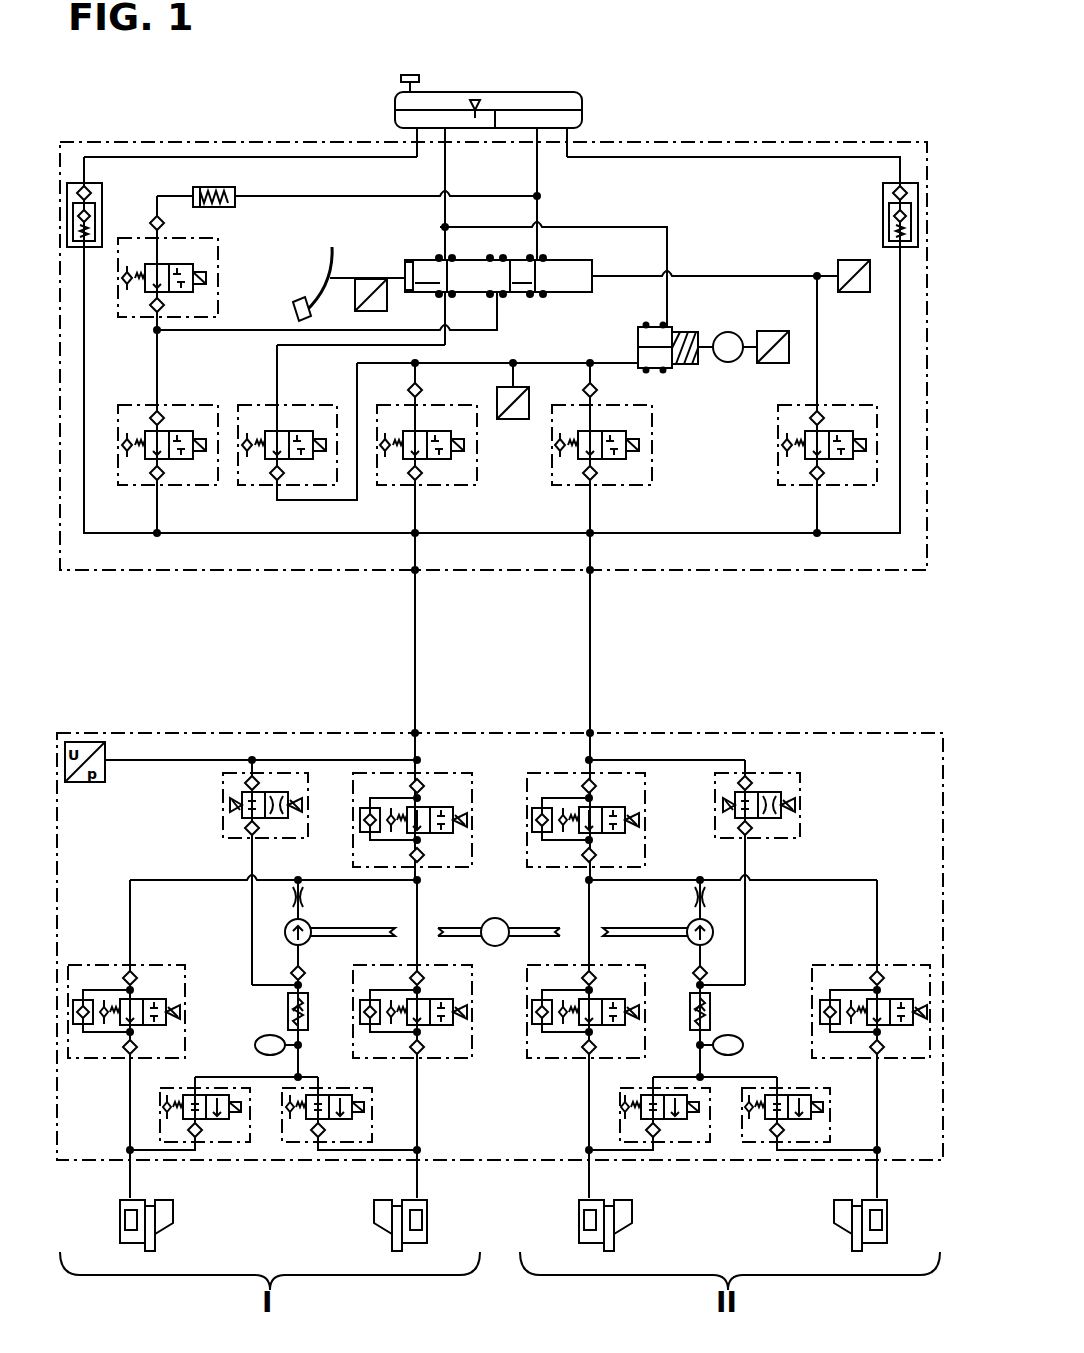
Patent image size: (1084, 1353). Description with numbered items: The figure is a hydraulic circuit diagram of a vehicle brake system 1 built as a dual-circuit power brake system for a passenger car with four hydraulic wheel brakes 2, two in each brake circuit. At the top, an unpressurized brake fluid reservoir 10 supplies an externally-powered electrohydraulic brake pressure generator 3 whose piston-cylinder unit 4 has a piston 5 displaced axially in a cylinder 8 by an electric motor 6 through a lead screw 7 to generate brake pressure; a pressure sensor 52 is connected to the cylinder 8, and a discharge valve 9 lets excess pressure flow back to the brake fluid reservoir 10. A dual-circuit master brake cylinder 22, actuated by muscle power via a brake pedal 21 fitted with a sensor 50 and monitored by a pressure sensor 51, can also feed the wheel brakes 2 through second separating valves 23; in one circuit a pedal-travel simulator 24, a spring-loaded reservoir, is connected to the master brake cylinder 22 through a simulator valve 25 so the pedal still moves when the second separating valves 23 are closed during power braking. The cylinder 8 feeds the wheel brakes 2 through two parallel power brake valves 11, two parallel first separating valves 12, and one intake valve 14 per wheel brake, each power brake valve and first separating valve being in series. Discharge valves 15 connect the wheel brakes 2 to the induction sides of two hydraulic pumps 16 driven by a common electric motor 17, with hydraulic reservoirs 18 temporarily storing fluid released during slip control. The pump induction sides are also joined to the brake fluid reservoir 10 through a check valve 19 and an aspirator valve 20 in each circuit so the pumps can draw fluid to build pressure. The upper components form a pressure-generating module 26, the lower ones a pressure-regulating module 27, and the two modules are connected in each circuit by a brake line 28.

The vehicle brake system 1 is at (740, 72).
The hydraulic wheel brake 2 is at (165, 1216).
The externally-powered electrohydraulic brake pressure generator 3 is at (691, 375).
The piston-cylinder unit 4 is at (691, 373).
The piston 5 is at (655, 330).
The electric motor 6 is at (728, 332).
The lead screw 7 is at (705, 365).
The cylinder 8 is at (638, 345).
The discharge valve 9 is at (270, 440).
The brake fluid reservoir 10 is at (480, 92).
The power brake valve 11 is at (422, 460).
The first separating valve 12 is at (440, 840).
The intake valve 14 is at (125, 1035).
The discharge valve 15 is at (215, 1122).
The hydraulic pump 16 is at (285, 927).
The electric motor 17 is at (495, 947).
The hydraulic reservoir 18 is at (255, 1045).
The check valve 19 is at (101, 215).
The aspirator valve 20 is at (285, 835).
The brake pedal 21 is at (300, 303).
The dual-circuit master brake cylinder 22 is at (592, 276).
The second separating valve 23 is at (165, 460).
The pedal-travel simulator 24 is at (220, 187).
The simulator valve 25 is at (193, 278).
The pressure-generating module 26 is at (845, 142).
The pressure-regulating module 27 is at (820, 733).
The brake line 28 is at (415, 652).
The pedal travel sensor 50 is at (370, 279).
The pressure sensor 51 is at (855, 292).
The pressure sensor 52 is at (513, 419).